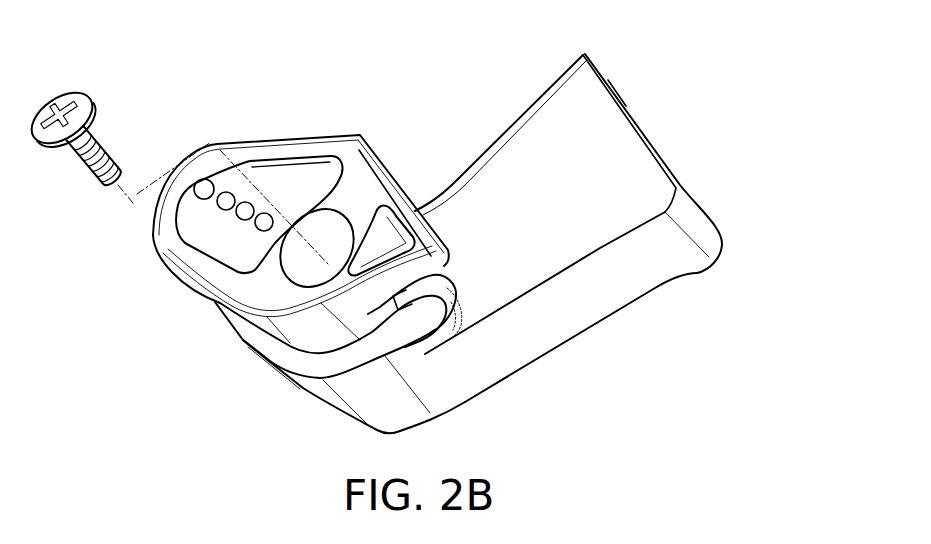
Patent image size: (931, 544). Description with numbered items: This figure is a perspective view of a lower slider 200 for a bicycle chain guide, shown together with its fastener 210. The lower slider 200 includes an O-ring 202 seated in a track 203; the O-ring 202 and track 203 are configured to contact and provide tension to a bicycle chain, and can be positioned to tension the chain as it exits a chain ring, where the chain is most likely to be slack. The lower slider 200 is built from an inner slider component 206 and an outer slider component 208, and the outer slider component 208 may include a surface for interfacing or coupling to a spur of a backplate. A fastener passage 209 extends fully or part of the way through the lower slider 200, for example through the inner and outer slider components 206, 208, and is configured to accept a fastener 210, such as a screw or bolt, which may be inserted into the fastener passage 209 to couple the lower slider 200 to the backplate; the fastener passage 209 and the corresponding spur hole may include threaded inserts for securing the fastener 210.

The lower slider 200 is at (657, 114).
The O-ring 202 is at (298, 378).
The track 203 is at (443, 325).
The inner slider component 206 is at (281, 177).
The outer slider component 208 is at (673, 257).
The fastener passage 209 is at (230, 294).
The fastener 210 is at (97, 103).